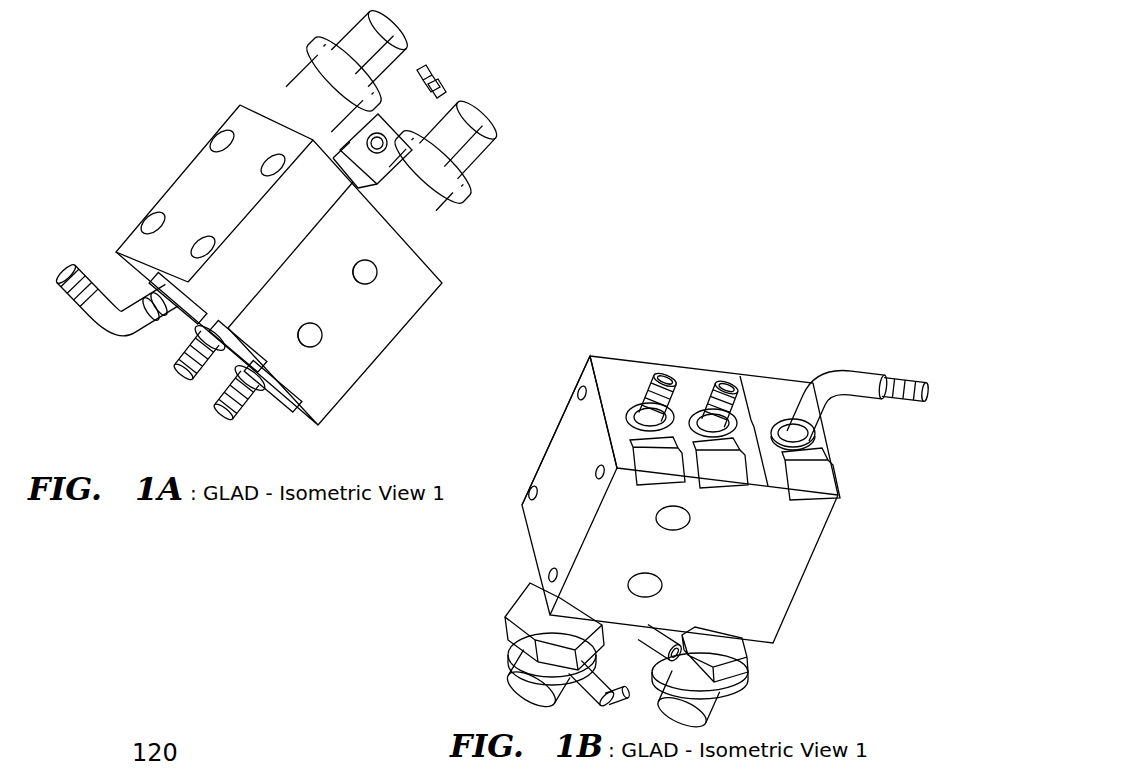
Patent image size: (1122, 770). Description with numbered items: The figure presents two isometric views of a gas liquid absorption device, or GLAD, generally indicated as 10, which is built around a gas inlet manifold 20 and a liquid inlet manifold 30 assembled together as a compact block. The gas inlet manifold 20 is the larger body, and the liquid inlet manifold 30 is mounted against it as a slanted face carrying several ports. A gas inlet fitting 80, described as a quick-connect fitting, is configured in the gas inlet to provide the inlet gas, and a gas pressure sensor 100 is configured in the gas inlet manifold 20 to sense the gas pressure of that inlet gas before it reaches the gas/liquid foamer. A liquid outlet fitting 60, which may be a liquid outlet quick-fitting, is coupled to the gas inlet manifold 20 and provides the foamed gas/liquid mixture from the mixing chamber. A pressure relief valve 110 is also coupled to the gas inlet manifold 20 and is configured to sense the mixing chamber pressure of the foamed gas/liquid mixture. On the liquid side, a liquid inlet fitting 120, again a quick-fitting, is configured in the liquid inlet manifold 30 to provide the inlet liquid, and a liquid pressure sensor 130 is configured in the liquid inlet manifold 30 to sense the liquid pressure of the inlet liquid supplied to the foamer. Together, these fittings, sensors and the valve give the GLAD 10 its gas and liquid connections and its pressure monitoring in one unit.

In FIG. 1A, the gas liquid absorption device (GLAD) 10 is at (119, 69).
In FIG. 1A, the gas inlet manifold 20 is at (392, 356).
In FIG. 1B, the gas inlet manifold 20 is at (613, 350).
In FIG. 1A, the liquid inlet manifold 30 is at (212, 181).
In FIG. 1B, the liquid inlet manifold 30 is at (806, 378).
In FIG. 1A, the liquid outlet fitting 60 is at (178, 357).
In FIG. 1B, the liquid outlet fitting 60 is at (726, 372).
In FIG. 1A, the gas inlet fitting 80 is at (212, 407).
In FIG. 1B, the gas inlet fitting 80 is at (667, 368).
In FIG. 1A, the gas pressure sensor 100 is at (490, 105).
In FIG. 1A, the pressure relief valve 110 is at (441, 73).
In FIG. 1A, the liquid inlet fitting 120 is at (88, 333).
In FIG. 1B, the liquid inlet fitting 120 is at (795, 398).
In FIG. 1A, the liquid pressure sensor 130 is at (300, 51).